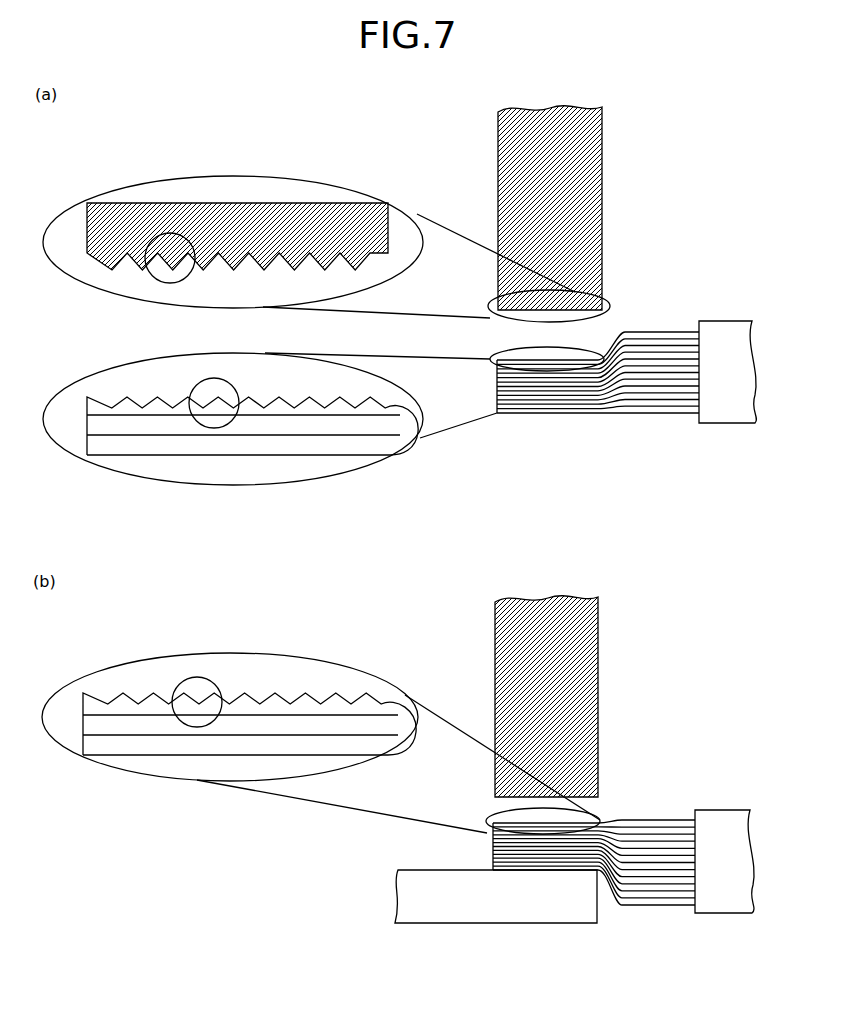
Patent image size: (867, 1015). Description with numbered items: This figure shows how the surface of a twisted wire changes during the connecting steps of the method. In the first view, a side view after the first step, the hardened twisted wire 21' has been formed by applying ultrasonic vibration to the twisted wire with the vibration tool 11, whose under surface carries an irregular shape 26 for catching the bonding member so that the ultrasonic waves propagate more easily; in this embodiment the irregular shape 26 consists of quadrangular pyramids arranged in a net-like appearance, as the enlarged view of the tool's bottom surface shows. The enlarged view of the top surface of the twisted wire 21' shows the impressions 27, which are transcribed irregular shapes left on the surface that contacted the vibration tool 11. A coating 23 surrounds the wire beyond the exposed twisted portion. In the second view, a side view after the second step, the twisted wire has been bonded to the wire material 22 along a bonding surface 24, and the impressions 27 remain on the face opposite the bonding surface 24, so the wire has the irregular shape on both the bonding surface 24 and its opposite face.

The vibration tool 11 is at (602, 197).
The hardened twisted wire 21' is at (606, 328).
The wire material 22 is at (410, 900).
The coating 23 is at (730, 330).
The bonding surface 24 is at (567, 362).
The irregular shape formed on under surface of vibration tool 26 is at (153, 277).
The impressions 27 is at (203, 387).